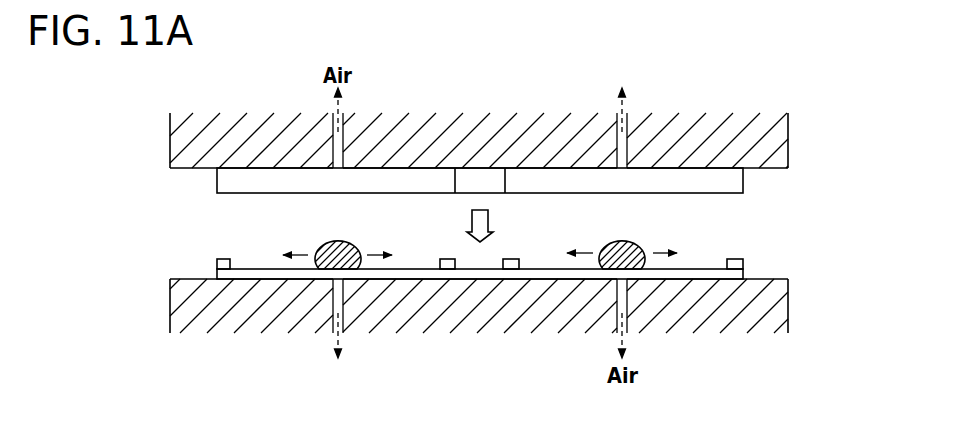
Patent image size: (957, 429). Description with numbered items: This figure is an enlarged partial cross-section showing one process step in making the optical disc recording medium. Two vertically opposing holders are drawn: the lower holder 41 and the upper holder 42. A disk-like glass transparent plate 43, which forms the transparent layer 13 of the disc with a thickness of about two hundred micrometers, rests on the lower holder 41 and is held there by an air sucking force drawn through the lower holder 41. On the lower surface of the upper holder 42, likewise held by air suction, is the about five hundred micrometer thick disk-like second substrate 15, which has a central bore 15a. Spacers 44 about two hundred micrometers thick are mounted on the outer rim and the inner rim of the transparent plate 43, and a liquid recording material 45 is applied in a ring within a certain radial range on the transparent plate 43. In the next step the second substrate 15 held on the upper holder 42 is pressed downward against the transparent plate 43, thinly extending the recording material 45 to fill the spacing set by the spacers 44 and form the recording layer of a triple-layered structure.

The upper holder 42 is at (788, 138).
The second substrate 15 is at (512, 199).
The central bore 15a is at (455, 194).
The lower holder 41 is at (788, 318).
The transparent plate 43 is at (547, 255).
The transparent layer 13 is at (485, 270).
The spacers 44 is at (743, 262).
The liquid recording material 45 is at (640, 241).